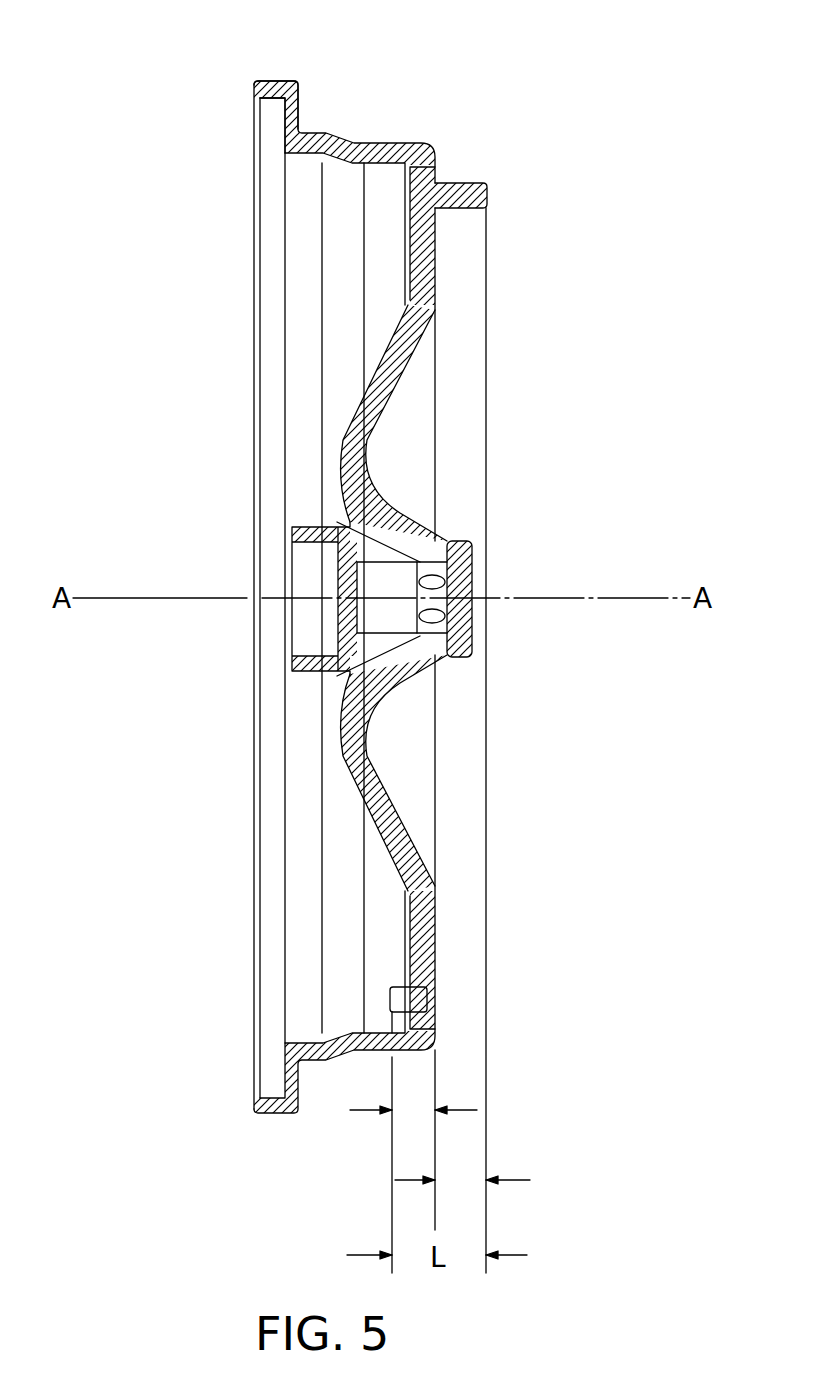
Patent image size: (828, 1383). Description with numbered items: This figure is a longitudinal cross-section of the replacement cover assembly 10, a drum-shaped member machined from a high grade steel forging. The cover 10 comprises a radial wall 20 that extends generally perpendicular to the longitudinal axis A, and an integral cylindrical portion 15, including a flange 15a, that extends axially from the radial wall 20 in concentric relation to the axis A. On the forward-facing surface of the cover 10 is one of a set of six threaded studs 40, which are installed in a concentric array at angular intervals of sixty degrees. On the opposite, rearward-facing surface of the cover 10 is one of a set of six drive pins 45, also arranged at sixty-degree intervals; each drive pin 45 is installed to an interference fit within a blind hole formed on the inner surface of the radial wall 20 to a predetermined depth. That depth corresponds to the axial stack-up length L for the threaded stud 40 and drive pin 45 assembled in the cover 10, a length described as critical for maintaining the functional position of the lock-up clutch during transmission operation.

The replacement cover assembly 10 is at (188, 361).
The cylindrical portion 15 is at (350, 142).
The flange 15a is at (293, 80).
The radial wall 20 is at (372, 428).
The threaded stud 40 is at (474, 182).
The drive pin 45 is at (390, 990).